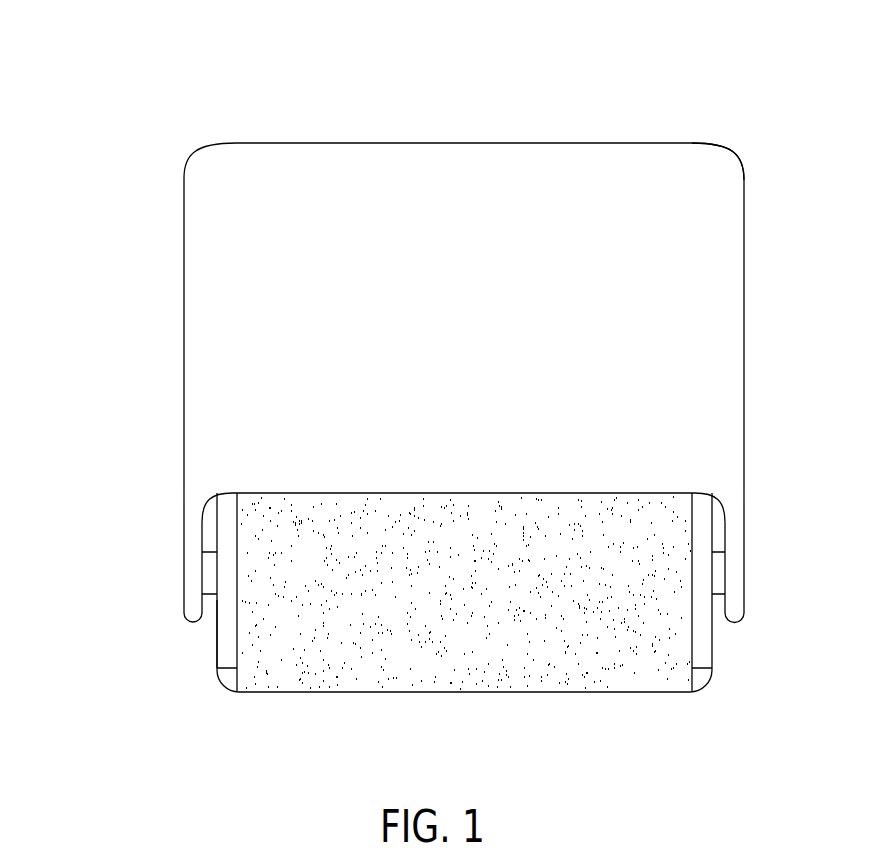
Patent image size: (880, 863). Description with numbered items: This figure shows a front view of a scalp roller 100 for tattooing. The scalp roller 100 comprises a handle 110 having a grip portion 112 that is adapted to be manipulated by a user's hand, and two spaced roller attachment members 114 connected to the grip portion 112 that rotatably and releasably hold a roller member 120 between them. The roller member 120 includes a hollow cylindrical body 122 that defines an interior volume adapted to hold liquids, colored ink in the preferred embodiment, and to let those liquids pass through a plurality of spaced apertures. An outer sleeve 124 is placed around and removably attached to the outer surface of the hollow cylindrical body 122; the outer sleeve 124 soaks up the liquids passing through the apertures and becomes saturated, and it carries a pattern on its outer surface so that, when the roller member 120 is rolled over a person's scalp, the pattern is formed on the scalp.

The scalp roller 100 is at (165, 75).
The handle 110 is at (246, 318).
The grip portion 112 is at (724, 142).
The roller attachment member 114 is at (176, 535).
The roller member 120 is at (216, 680).
The hollow cylindrical body 122 is at (210, 643).
The outer sleeve 124 is at (670, 628).